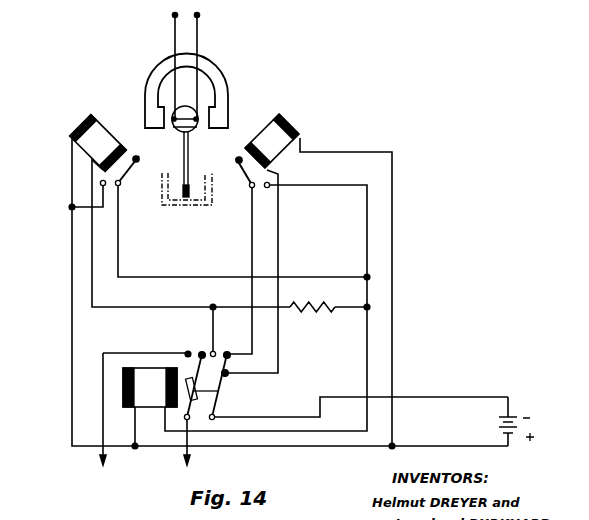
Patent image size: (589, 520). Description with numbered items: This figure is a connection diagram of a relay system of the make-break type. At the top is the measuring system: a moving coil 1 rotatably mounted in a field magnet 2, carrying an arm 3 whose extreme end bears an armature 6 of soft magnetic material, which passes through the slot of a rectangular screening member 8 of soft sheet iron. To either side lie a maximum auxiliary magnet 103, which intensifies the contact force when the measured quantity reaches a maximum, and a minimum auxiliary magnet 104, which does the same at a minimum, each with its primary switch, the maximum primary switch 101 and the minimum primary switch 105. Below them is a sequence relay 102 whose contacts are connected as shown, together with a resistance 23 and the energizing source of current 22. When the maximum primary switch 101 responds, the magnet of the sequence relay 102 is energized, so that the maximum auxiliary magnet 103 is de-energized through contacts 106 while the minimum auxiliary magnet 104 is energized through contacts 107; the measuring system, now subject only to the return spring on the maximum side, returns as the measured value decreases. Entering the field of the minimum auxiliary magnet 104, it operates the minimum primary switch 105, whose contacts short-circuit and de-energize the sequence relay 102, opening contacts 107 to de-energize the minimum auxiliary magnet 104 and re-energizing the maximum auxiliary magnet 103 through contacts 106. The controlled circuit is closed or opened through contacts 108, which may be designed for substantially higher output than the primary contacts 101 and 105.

The moving coil 1 is at (182, 124).
The field magnet 2 is at (215, 78).
The arm 3 is at (190, 152).
The armature 6 is at (184, 198).
The screening member 8 is at (206, 207).
The energizing source of current 22 is at (524, 426).
The resistance 23 is at (312, 318).
The maximum primary switch 101 is at (233, 157).
The sequence relay 102 is at (124, 395).
The maximum auxiliary magnet 103 is at (297, 131).
The minimum auxiliary magnet 104 is at (79, 124).
The minimum primary switch 105 is at (138, 151).
The contacts 106 is at (229, 376).
The contacts 107 is at (224, 350).
The contacts 108 is at (200, 351).